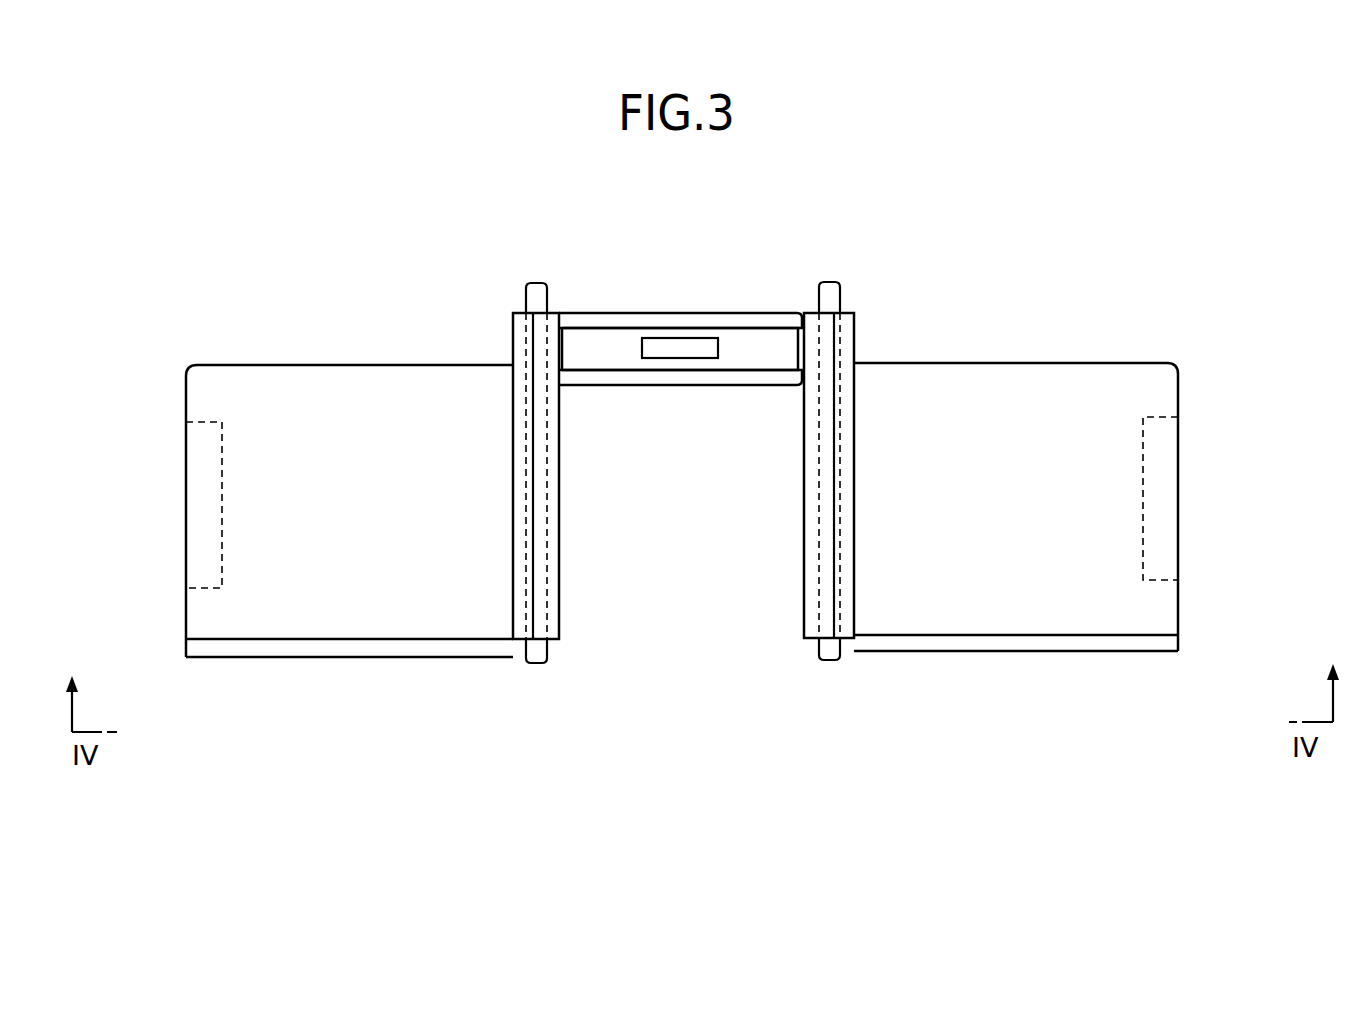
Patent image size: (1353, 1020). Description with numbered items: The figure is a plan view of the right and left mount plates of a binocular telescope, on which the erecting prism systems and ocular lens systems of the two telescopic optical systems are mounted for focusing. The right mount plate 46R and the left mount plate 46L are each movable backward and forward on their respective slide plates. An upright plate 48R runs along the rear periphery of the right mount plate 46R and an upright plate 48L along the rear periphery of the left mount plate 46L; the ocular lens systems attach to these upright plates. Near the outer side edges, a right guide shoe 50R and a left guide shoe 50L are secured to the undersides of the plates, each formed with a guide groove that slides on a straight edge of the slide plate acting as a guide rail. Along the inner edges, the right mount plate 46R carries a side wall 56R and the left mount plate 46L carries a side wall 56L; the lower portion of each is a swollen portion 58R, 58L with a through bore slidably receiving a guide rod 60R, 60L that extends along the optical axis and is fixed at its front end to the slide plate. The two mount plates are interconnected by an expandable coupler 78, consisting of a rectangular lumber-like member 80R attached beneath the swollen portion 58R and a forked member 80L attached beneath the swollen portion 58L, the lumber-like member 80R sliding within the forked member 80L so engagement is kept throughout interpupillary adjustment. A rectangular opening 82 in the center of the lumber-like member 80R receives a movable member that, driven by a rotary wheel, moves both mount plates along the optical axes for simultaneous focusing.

The left mount plate 46L is at (268, 382).
The right mount plate 46R is at (1049, 354).
The upright plate 48L is at (180, 648).
The upright plate 48R is at (1192, 642).
The left guide shoe 50L is at (200, 510).
The right guide shoe 50R is at (1163, 497).
The side wall 56L is at (504, 520).
The side wall 56R is at (866, 515).
The swollen portion 58L is at (558, 592).
The swollen portion 58R is at (808, 595).
The guide rod 60L is at (527, 301).
The guide rod 60R is at (838, 298).
The expandable coupler 78 is at (680, 340).
The forked member 80L is at (617, 385).
The lumber-like member 80R is at (751, 358).
The rectangular opening 82 is at (665, 353).